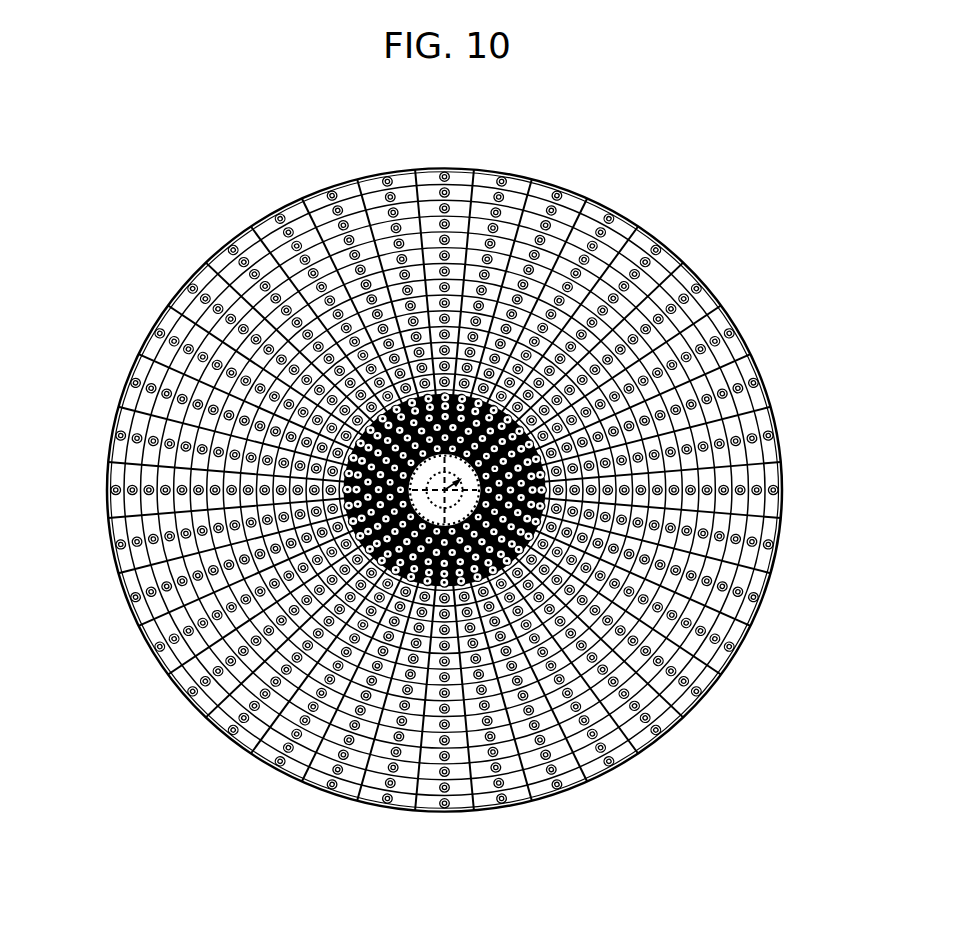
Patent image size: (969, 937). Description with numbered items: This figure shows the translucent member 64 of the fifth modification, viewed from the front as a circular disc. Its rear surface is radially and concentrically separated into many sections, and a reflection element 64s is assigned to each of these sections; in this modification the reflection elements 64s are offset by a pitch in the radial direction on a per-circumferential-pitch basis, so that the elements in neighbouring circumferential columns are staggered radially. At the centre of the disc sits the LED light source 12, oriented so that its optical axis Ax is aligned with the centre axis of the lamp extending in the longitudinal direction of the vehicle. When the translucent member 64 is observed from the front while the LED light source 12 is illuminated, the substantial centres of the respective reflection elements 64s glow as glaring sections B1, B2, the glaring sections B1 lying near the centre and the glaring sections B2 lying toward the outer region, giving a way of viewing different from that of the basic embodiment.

The translucent member 64 is at (762, 363).
The reflection elements 64s is at (710, 693).
The glaring section B2 is at (163, 333).
The glaring section B1 is at (483, 438).
The LED light source 12 is at (473, 470).
The optical axis Ax is at (437, 515).